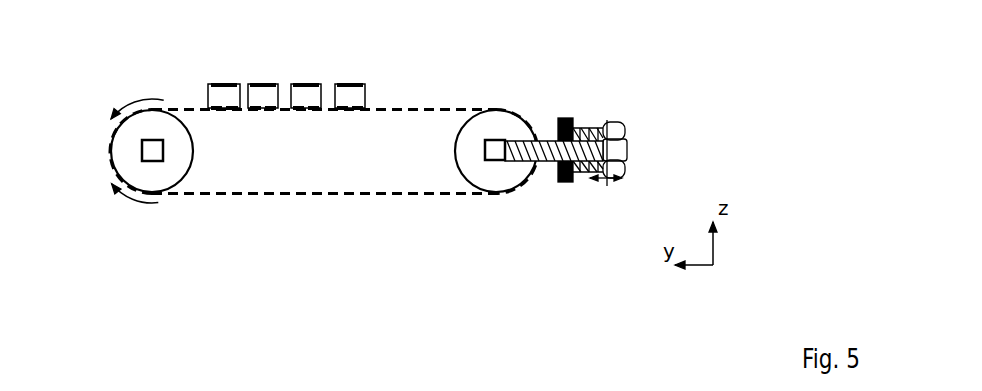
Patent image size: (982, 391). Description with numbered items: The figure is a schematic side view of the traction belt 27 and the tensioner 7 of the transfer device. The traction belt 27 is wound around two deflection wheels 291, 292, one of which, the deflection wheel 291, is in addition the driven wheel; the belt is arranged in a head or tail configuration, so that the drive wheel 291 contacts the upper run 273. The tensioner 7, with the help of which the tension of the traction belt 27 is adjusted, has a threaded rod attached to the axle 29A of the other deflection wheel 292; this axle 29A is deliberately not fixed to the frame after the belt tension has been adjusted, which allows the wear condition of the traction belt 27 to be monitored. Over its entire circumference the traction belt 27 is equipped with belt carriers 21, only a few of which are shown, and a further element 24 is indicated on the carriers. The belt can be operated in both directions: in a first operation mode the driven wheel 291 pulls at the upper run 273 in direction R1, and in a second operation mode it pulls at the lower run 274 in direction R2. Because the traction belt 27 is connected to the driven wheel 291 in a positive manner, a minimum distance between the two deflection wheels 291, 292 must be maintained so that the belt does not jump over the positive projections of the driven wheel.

The tensioner 7 is at (592, 72).
The belt carriers 21 is at (235, 82).
The holding element 24 is at (222, 82).
The traction belt 27 is at (324, 151).
The upper run 273 is at (430, 108).
The lower run 274 is at (434, 195).
The axle 29A is at (493, 140).
The deflection wheel 291 is at (122, 150).
The deflection wheel 292 is at (467, 150).
The direction R1 is at (134, 103).
The direction R2 is at (135, 200).